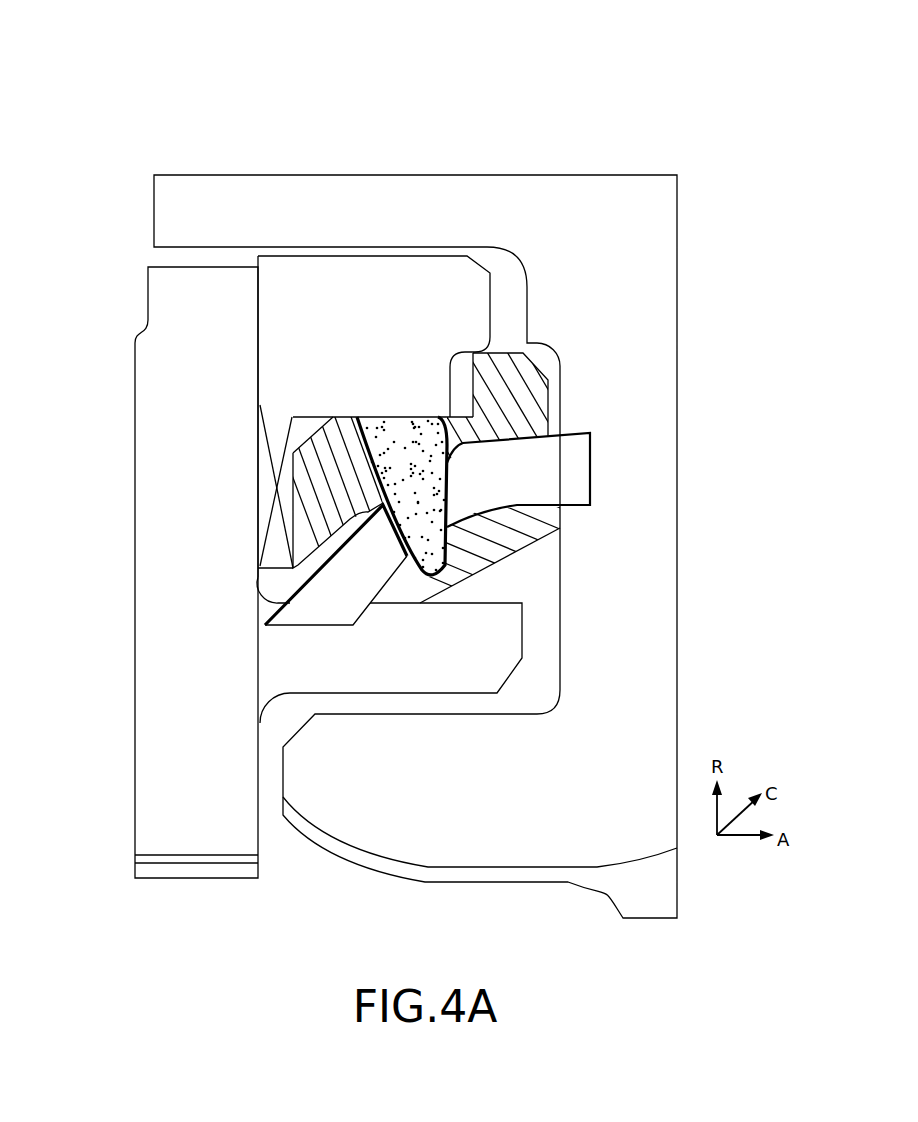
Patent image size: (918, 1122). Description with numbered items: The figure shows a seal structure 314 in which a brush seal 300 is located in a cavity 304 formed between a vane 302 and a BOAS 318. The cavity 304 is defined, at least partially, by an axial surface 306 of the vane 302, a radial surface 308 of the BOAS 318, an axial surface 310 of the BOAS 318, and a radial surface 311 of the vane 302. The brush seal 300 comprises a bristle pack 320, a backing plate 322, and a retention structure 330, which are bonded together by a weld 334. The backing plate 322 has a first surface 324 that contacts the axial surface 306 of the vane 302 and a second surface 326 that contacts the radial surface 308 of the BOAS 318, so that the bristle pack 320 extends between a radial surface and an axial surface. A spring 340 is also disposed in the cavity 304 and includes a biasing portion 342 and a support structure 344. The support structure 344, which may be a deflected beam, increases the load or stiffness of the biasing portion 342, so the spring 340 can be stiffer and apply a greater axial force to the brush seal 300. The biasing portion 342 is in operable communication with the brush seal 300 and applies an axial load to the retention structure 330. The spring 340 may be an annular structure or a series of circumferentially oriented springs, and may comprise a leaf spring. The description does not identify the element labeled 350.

The seal structure 314 is at (124, 73).
The brush seal 300 is at (598, 395).
The vane 302 is at (568, 758).
The cavity 304 is at (505, 278).
The axial surface 306 is at (560, 647).
The radial surface 308 is at (478, 603).
The axial surface 310 is at (260, 393).
The radial surface 311 is at (368, 250).
The BOAS 318 is at (157, 649).
The bristle pack 320 is at (482, 488).
The backing plate 322 is at (515, 520).
The first surface 324 is at (560, 518).
The second surface 326 is at (397, 605).
The retention structure 330 is at (548, 385).
The weld 334 is at (392, 494).
The spring 340 is at (240, 430).
The biasing portion 342 is at (296, 505).
The support structure 344 is at (390, 287).
The seal layer 350 is at (322, 519).